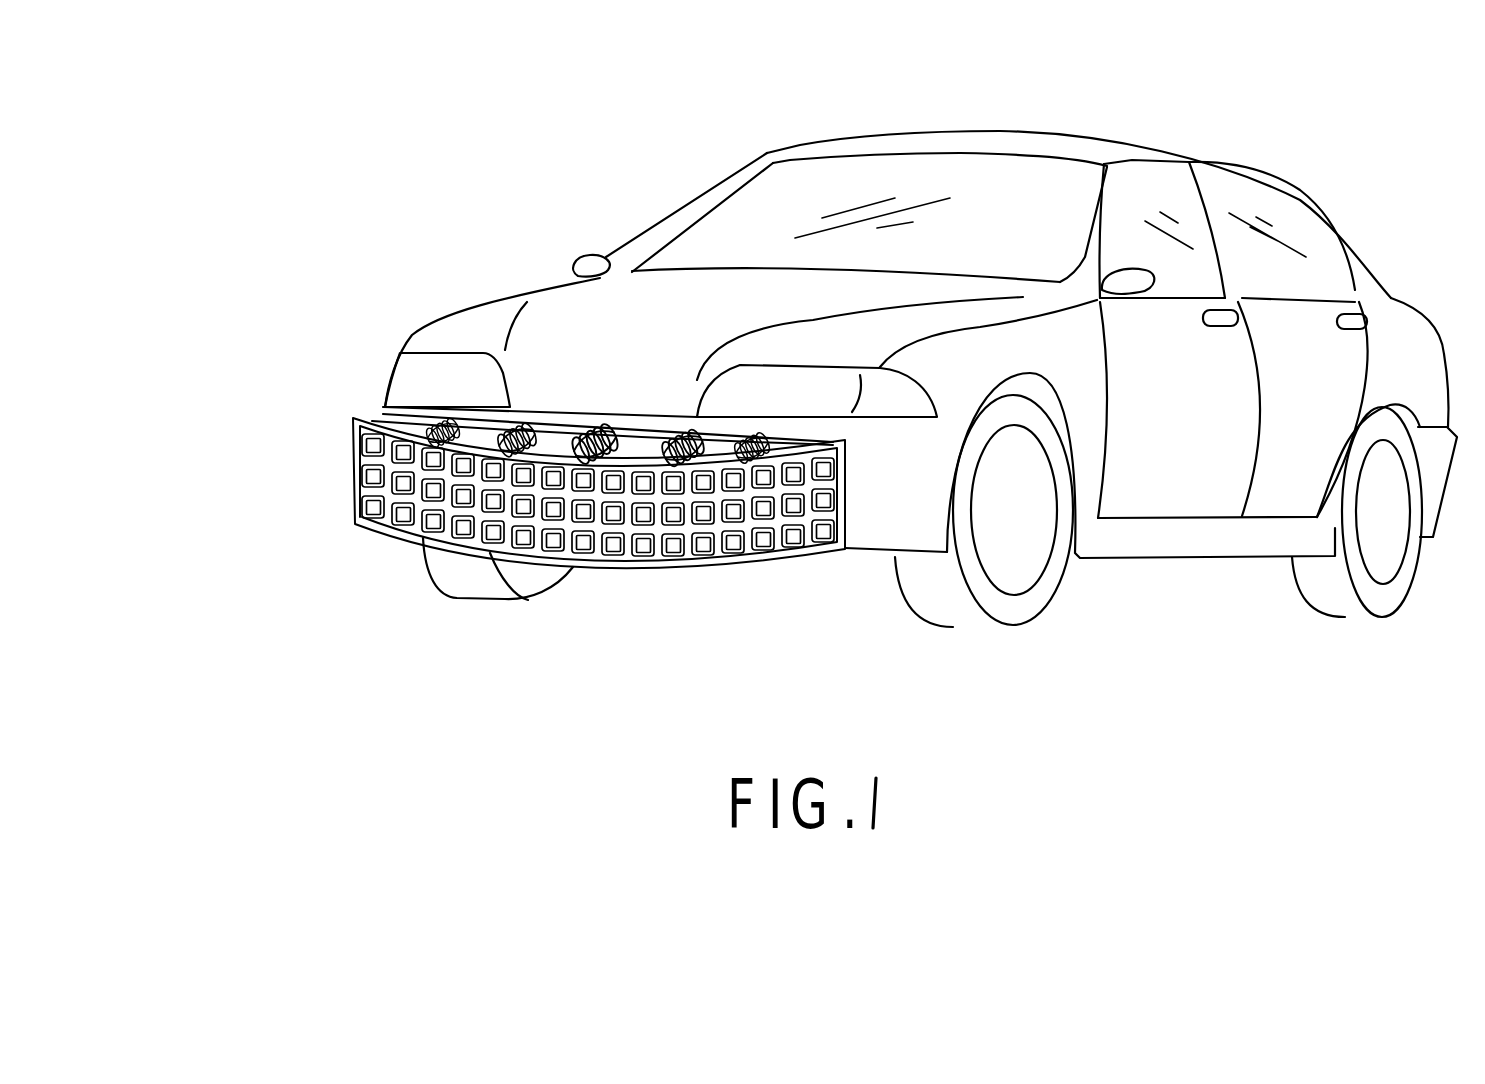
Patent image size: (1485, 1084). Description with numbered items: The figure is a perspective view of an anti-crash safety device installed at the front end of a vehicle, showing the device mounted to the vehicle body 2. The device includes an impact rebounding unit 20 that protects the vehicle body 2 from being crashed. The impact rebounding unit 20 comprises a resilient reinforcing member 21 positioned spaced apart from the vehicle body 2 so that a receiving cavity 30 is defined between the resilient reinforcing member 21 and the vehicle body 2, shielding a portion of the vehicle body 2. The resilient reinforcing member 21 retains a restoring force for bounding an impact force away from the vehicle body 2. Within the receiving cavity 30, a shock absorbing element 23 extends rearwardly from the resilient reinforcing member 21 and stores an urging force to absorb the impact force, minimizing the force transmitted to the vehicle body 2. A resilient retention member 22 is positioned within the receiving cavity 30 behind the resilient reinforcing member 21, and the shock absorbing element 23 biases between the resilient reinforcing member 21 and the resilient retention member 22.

The vehicle body 2 is at (570, 347).
The impact rebounding unit 20 is at (263, 217).
The resilient reinforcing member 21 is at (360, 493).
The resilient retention member 22 is at (463, 420).
The shock absorbing element 23 is at (603, 458).
The receiving cavity 30 is at (550, 433).